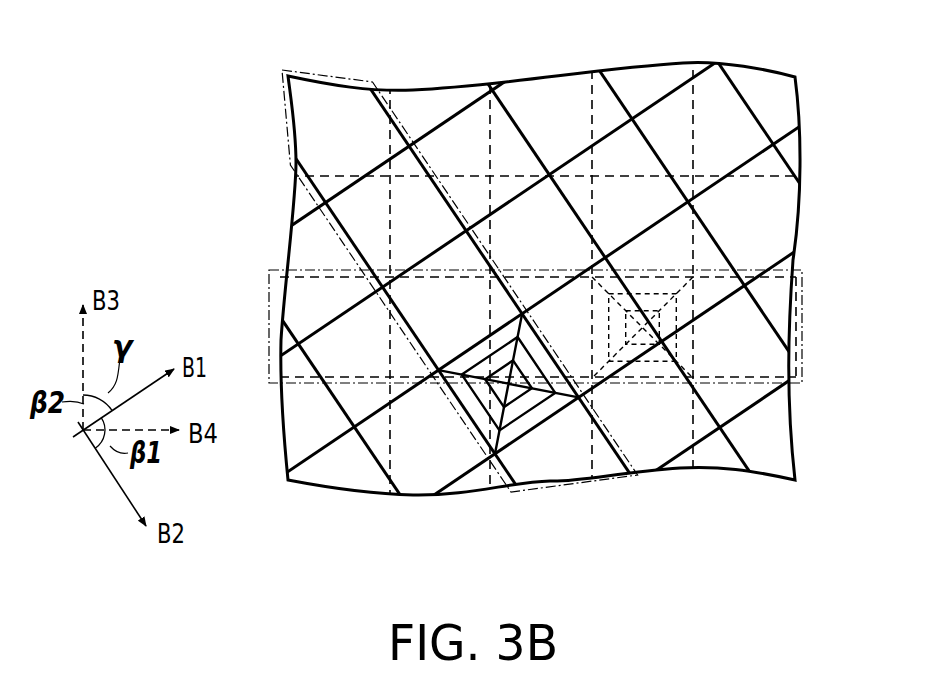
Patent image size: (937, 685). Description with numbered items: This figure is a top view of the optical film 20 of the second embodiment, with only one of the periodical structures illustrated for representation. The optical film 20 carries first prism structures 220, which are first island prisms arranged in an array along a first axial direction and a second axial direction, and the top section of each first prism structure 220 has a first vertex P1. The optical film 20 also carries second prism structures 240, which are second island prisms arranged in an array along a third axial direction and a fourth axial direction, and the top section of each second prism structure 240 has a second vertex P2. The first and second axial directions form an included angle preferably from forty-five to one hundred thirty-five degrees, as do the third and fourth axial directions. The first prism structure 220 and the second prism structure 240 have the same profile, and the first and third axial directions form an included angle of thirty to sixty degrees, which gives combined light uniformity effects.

The optical film 20 is at (255, 48).
The first prism structures 220 is at (605, 485).
The second prism structures 240 is at (802, 312).
The first vertex P1 is at (508, 384).
The second vertex P2 is at (693, 327).